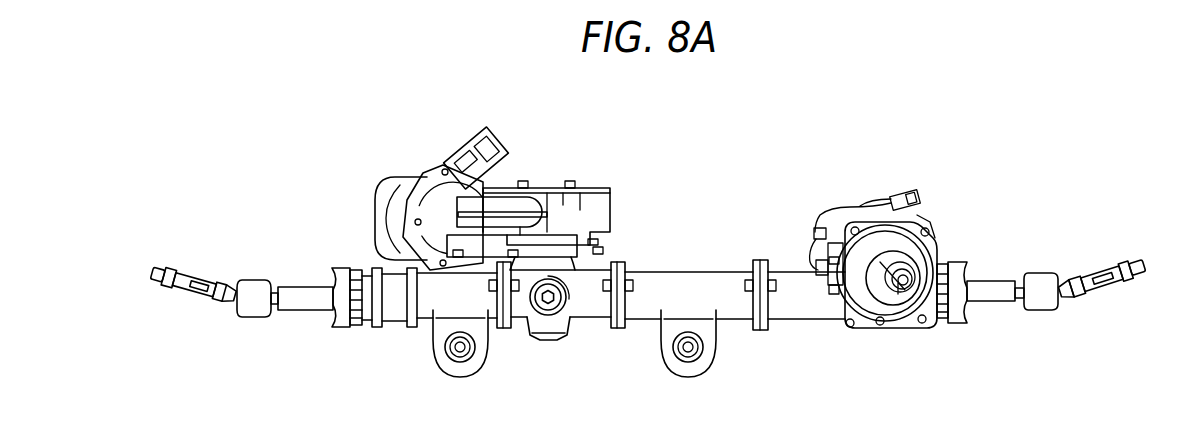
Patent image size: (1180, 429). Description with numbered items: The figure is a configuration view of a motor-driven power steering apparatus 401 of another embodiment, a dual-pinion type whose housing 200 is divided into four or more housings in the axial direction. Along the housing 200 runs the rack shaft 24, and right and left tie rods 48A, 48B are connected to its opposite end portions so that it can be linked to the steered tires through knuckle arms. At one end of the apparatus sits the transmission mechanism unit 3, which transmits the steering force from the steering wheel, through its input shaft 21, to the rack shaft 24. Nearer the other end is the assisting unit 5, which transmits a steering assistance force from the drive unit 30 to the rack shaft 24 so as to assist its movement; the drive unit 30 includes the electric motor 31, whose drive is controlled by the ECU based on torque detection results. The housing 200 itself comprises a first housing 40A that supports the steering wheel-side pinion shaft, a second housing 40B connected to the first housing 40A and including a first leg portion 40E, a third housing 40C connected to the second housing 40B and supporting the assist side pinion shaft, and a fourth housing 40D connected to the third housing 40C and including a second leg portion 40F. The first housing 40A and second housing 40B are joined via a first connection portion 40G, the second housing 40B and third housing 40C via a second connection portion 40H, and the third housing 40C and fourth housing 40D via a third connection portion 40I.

The motor-driven power steering apparatus 401 is at (495, 168).
The drive unit 30 is at (407, 172).
The electric motor 31 is at (388, 192).
The third connection portion 40I is at (505, 262).
The assisting unit 5 is at (616, 186).
The housing 200 is at (735, 216).
The second connection portion 40H is at (618, 263).
The first connection portion 40G is at (761, 261).
The transmission mechanism unit 3 is at (910, 249).
The input shaft 21 is at (907, 264).
The tie rod 48A is at (216, 283).
The rack shaft 24 is at (289, 288).
The tie rod 48B is at (1108, 265).
The second leg portion 40F is at (500, 374).
The first leg portion 40E is at (735, 343).
The fourth housing 40D is at (410, 343).
The third housing 40C is at (620, 374).
The second housing 40B is at (717, 364).
The first housing 40A is at (894, 295).